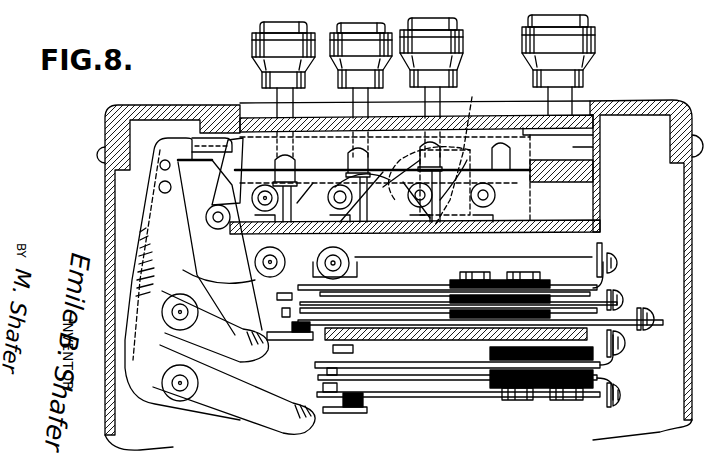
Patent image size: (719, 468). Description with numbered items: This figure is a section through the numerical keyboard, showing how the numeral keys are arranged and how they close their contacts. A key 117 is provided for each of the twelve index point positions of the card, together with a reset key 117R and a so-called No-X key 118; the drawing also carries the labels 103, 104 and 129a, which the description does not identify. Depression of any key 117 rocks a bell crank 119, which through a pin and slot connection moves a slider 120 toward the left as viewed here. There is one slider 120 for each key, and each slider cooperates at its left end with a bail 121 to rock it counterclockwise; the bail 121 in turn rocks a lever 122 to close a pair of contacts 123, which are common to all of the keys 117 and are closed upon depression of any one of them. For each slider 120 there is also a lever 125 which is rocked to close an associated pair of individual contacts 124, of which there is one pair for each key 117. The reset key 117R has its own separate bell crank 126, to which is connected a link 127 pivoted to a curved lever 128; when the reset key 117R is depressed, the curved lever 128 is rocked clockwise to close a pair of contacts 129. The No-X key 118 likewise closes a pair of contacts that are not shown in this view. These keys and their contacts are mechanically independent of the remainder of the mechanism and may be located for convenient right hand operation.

The housing assembly 103 is at (704, 8).
The mounting panel 104 is at (420, 8).
The key 117 is at (345, 42).
The reset key 117R is at (460, 20).
The No-X key 118 is at (588, 40).
The bell crank 119 is at (418, 220).
The slider 120 is at (575, 148).
The bail 121 is at (218, 167).
The lever 122 is at (148, 375).
The contacts 123 is at (335, 378).
The individual contacts 124 is at (282, 301).
The lever 125 is at (193, 278).
The bell crank 126 is at (464, 155).
The link 127 is at (262, 184).
The curved lever 128 is at (234, 265).
The contacts 129 is at (350, 268).
The leaf spring 129a is at (380, 293).